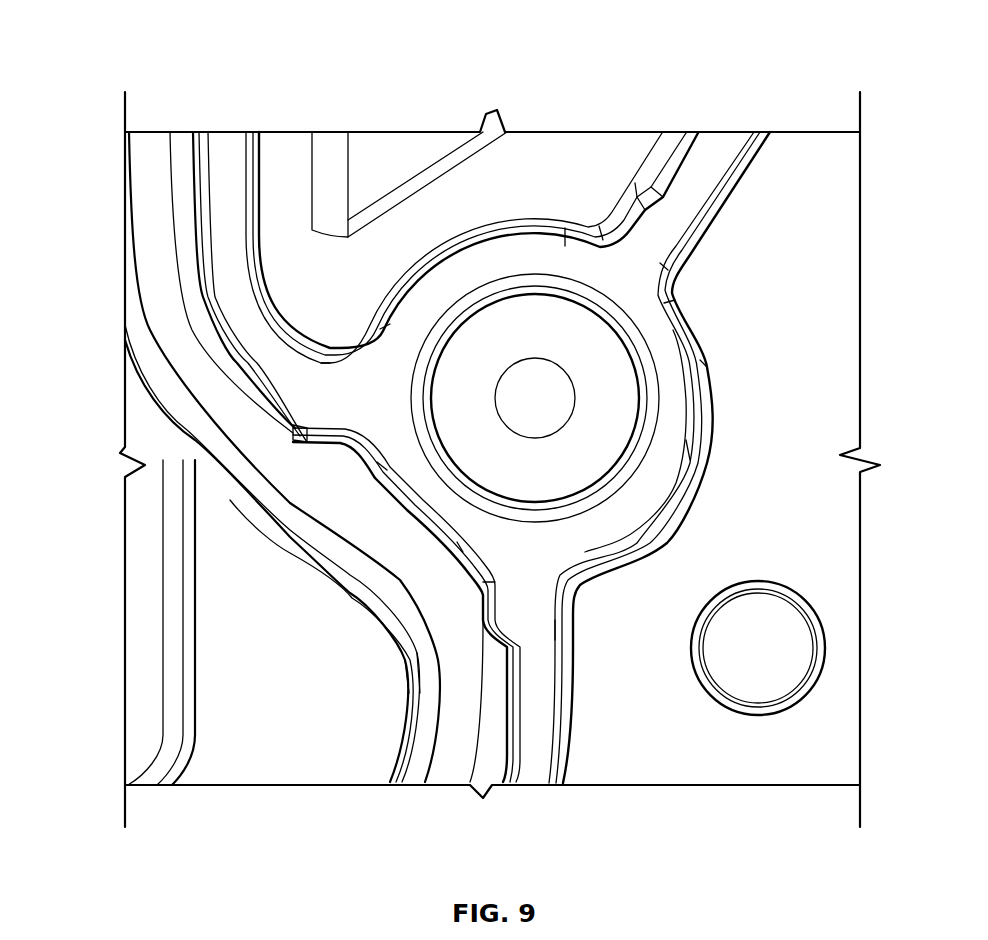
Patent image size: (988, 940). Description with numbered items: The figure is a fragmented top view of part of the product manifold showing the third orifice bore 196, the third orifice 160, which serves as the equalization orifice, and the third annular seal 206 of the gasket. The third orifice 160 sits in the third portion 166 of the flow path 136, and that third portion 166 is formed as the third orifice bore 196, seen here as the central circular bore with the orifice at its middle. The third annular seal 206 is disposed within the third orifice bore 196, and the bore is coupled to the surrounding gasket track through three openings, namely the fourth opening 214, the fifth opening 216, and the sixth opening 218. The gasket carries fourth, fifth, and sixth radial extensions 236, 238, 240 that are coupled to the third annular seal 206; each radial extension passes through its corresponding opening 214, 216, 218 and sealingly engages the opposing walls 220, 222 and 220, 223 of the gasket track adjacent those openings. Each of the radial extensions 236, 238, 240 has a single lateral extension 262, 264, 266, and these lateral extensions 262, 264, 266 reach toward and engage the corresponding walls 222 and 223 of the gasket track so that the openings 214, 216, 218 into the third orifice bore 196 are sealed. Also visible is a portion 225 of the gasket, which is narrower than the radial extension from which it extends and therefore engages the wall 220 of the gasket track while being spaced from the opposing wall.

The flow path 136 is at (545, 378).
The third orifice 160 is at (605, 403).
The third portion of the flow path 166 is at (713, 427).
The third orifice bore 196 is at (463, 548).
The third annular seal 206 is at (690, 461).
The fourth opening 214 is at (357, 448).
The fifth opening 216 is at (478, 577).
The sixth opening 218 is at (672, 282).
The wall of the gasket track 220 is at (757, 157).
The wall of the gasket track 222 is at (205, 362).
The wall of the gasket track 223 is at (253, 227).
The portion of the gasket 225 is at (250, 197).
The fourth radial extension 236 is at (338, 358).
The fifth radial extension 238 is at (562, 633).
The sixth radial extension 240 is at (670, 237).
The lateral extension 262 is at (302, 437).
The lateral extension 264 is at (487, 615).
The lateral extension 266 is at (632, 230).